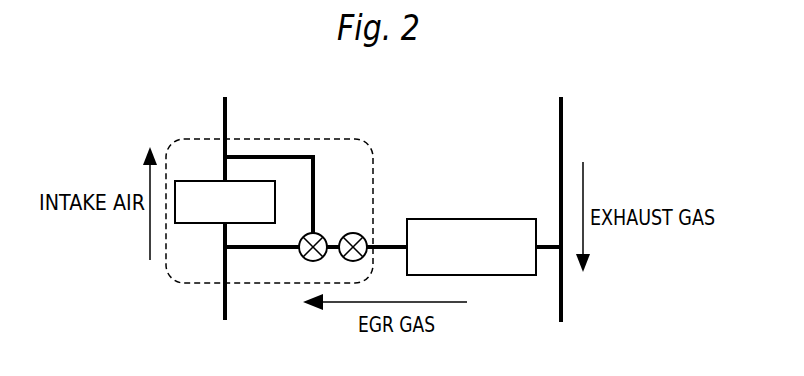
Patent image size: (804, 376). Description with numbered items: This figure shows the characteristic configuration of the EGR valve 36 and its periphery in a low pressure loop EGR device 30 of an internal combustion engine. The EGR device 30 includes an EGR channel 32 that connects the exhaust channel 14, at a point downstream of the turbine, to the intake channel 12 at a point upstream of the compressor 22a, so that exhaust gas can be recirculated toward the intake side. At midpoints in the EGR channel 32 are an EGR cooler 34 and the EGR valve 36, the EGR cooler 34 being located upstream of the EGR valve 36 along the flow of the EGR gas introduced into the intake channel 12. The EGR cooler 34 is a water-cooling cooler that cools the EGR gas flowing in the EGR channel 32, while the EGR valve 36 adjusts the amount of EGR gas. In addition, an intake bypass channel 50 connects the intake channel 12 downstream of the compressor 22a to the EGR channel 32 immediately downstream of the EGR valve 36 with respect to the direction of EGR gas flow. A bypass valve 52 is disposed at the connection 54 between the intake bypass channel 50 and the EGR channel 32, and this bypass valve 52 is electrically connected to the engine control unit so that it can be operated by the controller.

The intake channel 12 is at (223, 303).
The exhaust channel 14 is at (561, 141).
The compressor 22a is at (198, 181).
The EGR device 30 is at (480, 204).
The EGR channel 32 is at (388, 243).
The EGR cooler 34 is at (498, 275).
The EGR valve 36 is at (355, 233).
The intake bypass channel 50 is at (274, 155).
The bypass valve 52 is at (323, 232).
The connection 54 is at (313, 230).